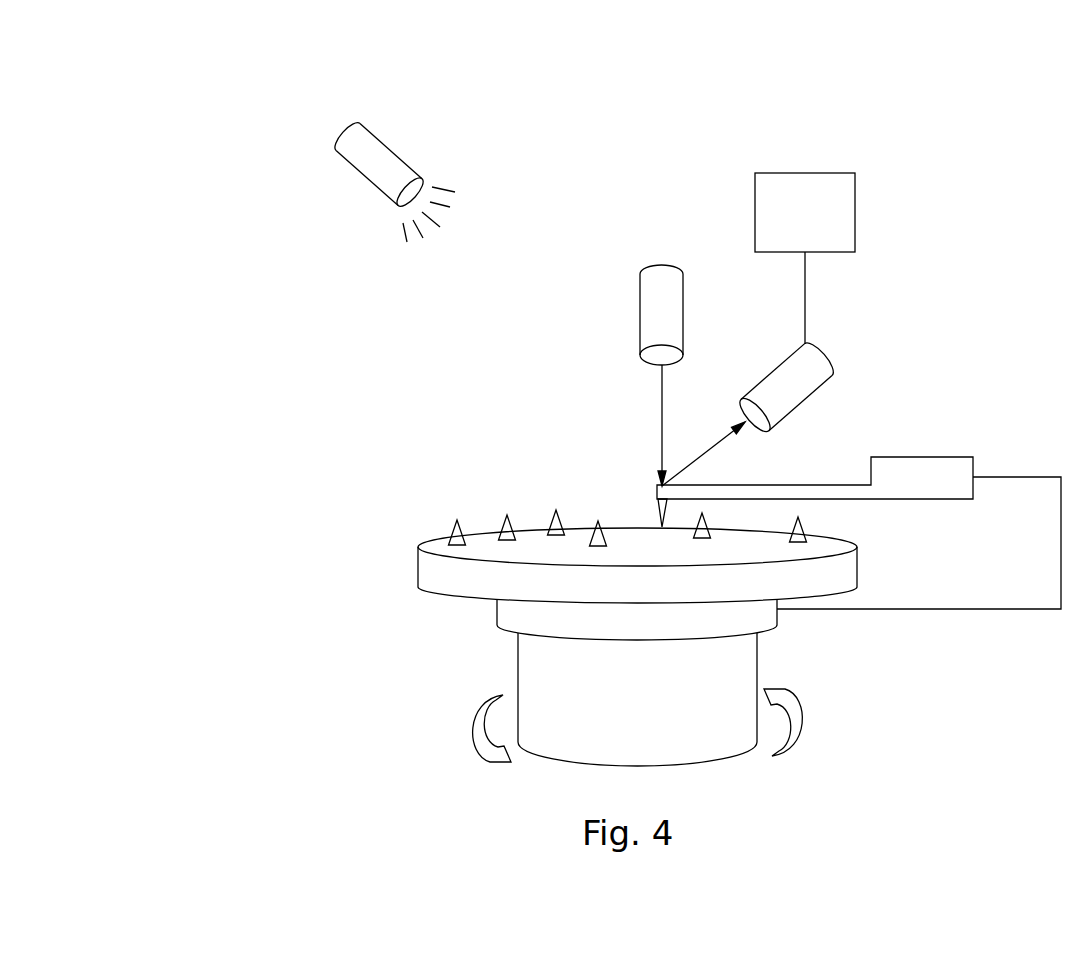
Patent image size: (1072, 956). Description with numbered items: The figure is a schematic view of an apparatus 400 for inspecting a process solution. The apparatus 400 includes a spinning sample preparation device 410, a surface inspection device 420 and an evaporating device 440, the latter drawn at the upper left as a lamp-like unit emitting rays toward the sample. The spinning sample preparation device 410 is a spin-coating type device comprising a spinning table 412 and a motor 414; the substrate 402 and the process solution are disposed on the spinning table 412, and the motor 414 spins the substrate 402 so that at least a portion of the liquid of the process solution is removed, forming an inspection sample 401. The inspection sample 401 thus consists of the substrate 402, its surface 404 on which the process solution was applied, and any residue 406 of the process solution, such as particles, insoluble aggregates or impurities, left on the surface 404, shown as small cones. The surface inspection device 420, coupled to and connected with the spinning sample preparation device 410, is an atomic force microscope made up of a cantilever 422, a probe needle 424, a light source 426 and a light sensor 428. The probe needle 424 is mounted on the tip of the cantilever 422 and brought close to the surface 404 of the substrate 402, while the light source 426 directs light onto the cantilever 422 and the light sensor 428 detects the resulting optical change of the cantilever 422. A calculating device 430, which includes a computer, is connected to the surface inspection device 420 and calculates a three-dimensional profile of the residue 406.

The apparatus 400 is at (190, 69).
The inspection sample 401 is at (215, 482).
The substrate 402 is at (417, 588).
The surface 404 is at (433, 563).
The residue 406 is at (458, 537).
The spinning sample preparation device 410 is at (985, 618).
The spinning table 412 is at (763, 613).
The motor 414 is at (733, 668).
The surface inspection device 420 is at (937, 90).
The cantilever 422 is at (922, 472).
The probe needle 424 is at (660, 508).
The light source 426 is at (662, 280).
The light sensor 428 is at (817, 372).
The calculating device 430 is at (807, 190).
The evaporating device 440 is at (363, 178).